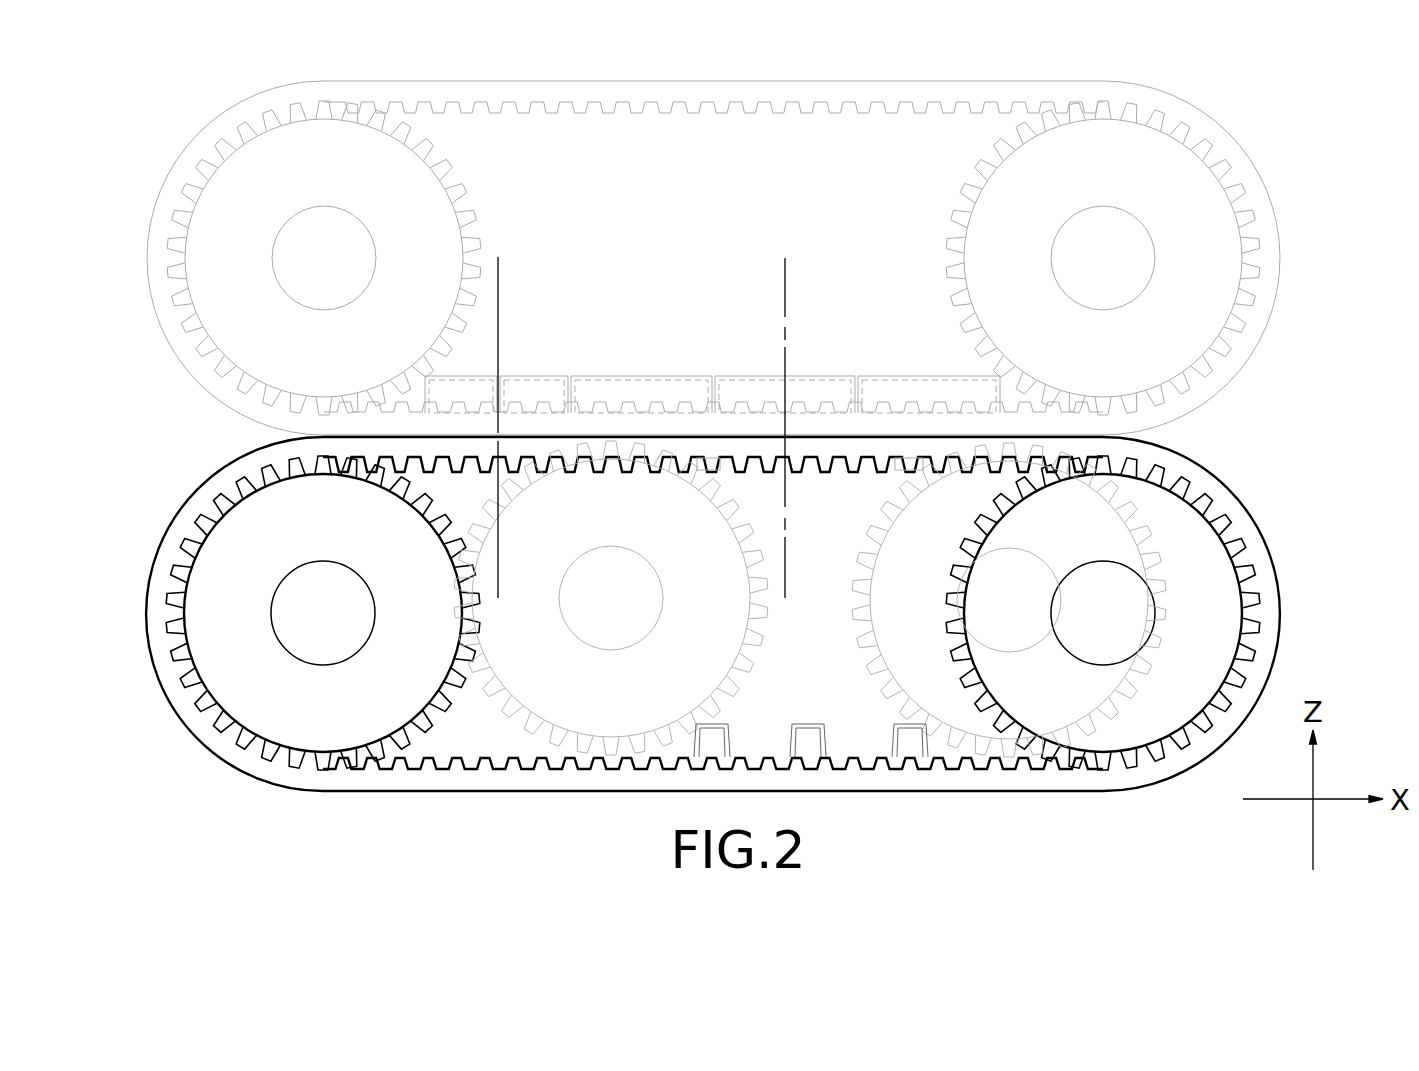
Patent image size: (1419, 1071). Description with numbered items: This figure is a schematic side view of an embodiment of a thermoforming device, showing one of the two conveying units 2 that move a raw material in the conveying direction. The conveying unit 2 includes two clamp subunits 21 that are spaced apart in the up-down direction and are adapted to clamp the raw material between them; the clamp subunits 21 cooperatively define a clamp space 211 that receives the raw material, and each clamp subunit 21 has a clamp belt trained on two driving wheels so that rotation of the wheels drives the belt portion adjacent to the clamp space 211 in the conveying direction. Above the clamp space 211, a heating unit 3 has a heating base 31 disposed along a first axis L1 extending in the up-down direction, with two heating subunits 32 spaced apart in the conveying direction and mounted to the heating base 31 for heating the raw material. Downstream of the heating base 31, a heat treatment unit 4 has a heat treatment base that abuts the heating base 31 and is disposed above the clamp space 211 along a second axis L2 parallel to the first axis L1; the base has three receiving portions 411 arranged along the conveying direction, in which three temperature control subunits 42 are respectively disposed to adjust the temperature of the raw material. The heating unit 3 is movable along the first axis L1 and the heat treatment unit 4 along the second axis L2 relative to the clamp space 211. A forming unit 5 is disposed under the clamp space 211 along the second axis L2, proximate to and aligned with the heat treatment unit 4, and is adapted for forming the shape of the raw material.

The conveying unit 2 is at (715, 462).
The clamp subunit 21 is at (737, 436).
The clamp space 211 is at (319, 435).
The heating unit 3 is at (510, 316).
The heating base 31 is at (503, 377).
The heating subunit 32 is at (470, 387).
The heat treatment unit 4 is at (785, 318).
The receiving portion 411 is at (685, 376).
The temperature control subunit 42 is at (610, 387).
The forming unit 5 is at (474, 718).
The first axis L1 is at (500, 408).
The second axis L2 is at (780, 408).